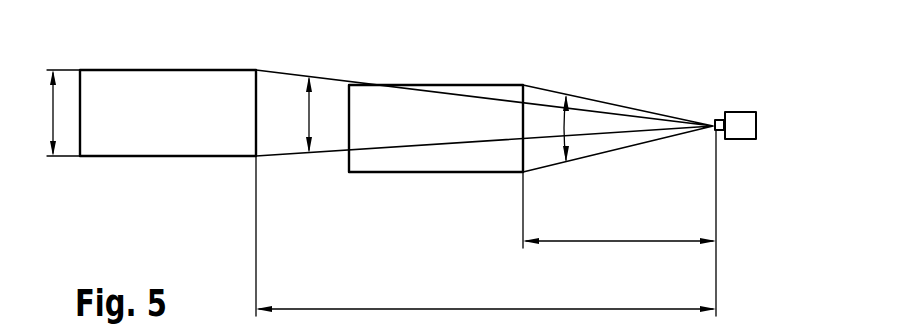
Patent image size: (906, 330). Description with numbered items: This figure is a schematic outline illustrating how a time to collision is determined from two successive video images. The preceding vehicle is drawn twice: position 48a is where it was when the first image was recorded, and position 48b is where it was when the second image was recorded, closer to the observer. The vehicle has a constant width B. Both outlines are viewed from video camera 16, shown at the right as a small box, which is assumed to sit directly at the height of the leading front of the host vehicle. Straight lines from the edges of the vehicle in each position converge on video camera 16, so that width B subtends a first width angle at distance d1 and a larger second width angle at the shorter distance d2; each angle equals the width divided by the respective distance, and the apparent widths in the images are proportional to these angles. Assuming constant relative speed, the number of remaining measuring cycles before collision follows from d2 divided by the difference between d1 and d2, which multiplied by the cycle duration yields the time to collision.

The position of vehicle when first image was recorded 48a is at (168, 70).
The position of vehicle when second image was recorded 48b is at (486, 85).
The video camera 16 is at (742, 118).
The width B is at (51, 113).
The distance d1 is at (487, 309).
The distance d2 is at (618, 241).